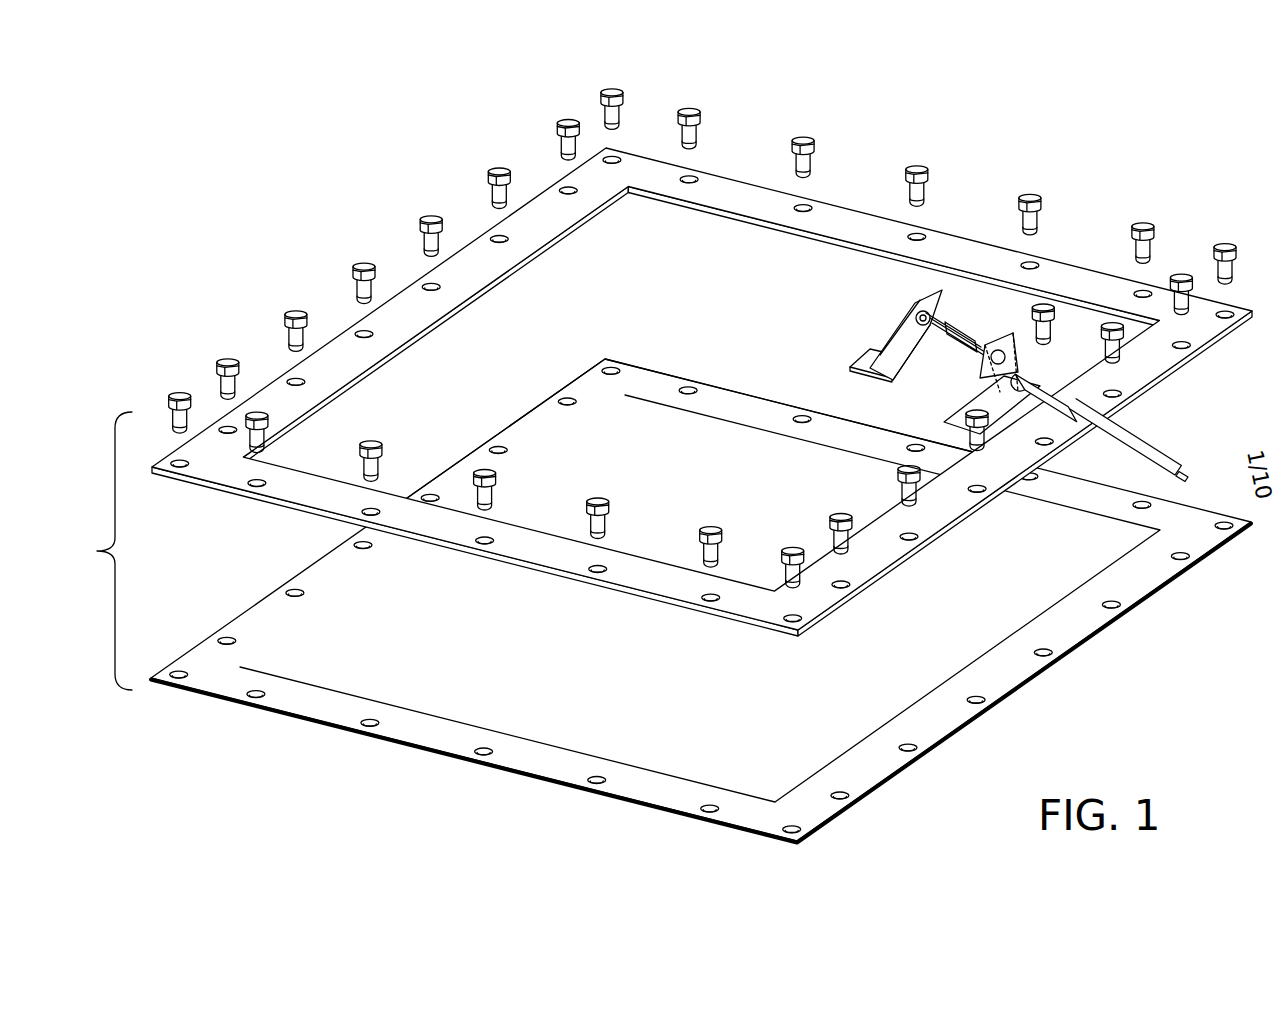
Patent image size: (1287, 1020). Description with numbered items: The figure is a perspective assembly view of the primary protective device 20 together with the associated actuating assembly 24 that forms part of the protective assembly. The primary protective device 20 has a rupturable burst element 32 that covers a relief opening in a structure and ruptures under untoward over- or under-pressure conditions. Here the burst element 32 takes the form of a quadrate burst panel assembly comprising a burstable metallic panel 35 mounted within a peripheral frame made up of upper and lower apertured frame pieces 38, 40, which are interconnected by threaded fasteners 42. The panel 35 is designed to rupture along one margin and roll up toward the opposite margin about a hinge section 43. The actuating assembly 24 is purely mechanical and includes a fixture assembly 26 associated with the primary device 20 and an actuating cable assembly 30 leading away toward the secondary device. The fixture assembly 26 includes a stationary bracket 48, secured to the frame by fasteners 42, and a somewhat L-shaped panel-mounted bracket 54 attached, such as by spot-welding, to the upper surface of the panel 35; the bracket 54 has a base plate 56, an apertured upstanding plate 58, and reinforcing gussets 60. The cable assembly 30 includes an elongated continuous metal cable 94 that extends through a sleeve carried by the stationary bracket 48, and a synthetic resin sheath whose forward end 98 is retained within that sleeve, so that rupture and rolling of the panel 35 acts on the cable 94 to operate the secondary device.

The primary protective device 20 is at (715, 360).
The actuating assembly 24 is at (1034, 383).
The fixture assembly 26 is at (715, 392).
The actuating cable assembly 30 is at (1140, 480).
The rupturable burst element 32 is at (718, 462).
The burstable metallic panel 35 is at (937, 665).
The upper apertured frame piece 38 is at (1200, 330).
The lower apertured frame piece 40 is at (715, 590).
The threaded fasteners 42 is at (1190, 277).
The hinge section 43 is at (563, 443).
The stationary bracket 48 is at (1002, 405).
The panel-mounted bracket 54 is at (917, 297).
The base plate 56 is at (863, 360).
The upstanding plate 58 is at (917, 348).
The reinforcing gussets 60 is at (895, 352).
The cable 94 is at (1175, 472).
The forward end of sheath 98 is at (1130, 442).